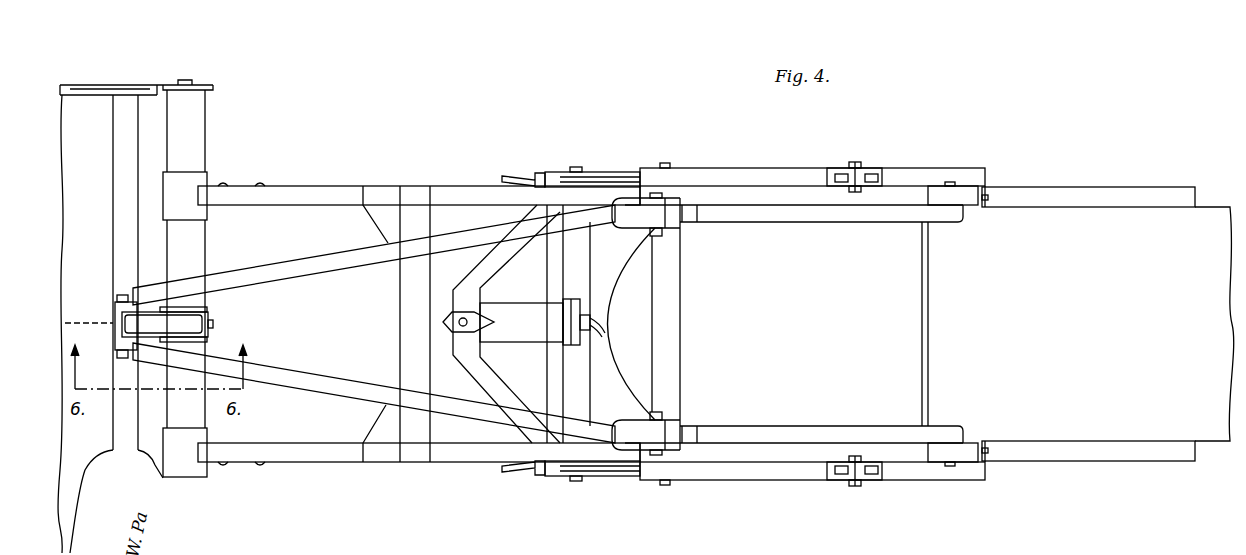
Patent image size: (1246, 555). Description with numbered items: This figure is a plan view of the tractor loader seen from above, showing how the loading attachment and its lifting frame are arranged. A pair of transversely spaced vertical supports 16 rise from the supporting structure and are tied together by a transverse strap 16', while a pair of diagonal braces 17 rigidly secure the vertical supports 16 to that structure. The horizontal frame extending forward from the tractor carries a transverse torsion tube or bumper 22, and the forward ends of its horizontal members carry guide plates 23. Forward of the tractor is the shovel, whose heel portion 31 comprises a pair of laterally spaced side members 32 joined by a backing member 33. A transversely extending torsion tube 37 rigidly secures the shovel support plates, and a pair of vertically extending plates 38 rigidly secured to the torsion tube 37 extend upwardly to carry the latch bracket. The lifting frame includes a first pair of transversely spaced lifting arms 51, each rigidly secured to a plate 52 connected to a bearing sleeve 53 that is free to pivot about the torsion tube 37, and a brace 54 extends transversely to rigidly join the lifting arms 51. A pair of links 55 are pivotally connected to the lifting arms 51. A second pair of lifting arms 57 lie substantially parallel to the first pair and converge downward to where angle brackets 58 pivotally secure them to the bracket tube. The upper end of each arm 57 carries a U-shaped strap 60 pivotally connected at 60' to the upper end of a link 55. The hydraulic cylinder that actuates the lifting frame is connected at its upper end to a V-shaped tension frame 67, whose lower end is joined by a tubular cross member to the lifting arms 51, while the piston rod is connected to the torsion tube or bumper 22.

The vertical supports 16 is at (937, 349).
The transverse strap 16' is at (955, 324).
The diagonal braces 17 is at (1060, 195).
The torsion tube or bumper 22 is at (580, 372).
The guide plates 23 is at (515, 175).
The heel portion 31 is at (155, 88).
The side members 32 is at (100, 90).
The backing member 33 is at (125, 185).
The torsion tube 37 is at (195, 113).
The vertically extending plates 38 is at (215, 305).
The lifting arms 51 is at (340, 186).
The plate 52 is at (275, 185).
The bearing sleeve 53 is at (207, 215).
The brace 54 is at (417, 450).
The links 55 is at (675, 205).
The second pair of lifting arms 57 is at (345, 265).
The angle brackets 58 is at (115, 305).
The U-shaped strap 60 is at (668, 362).
The pivotal connection 60' is at (689, 379).
The V-shaped tension frame 67 is at (495, 393).